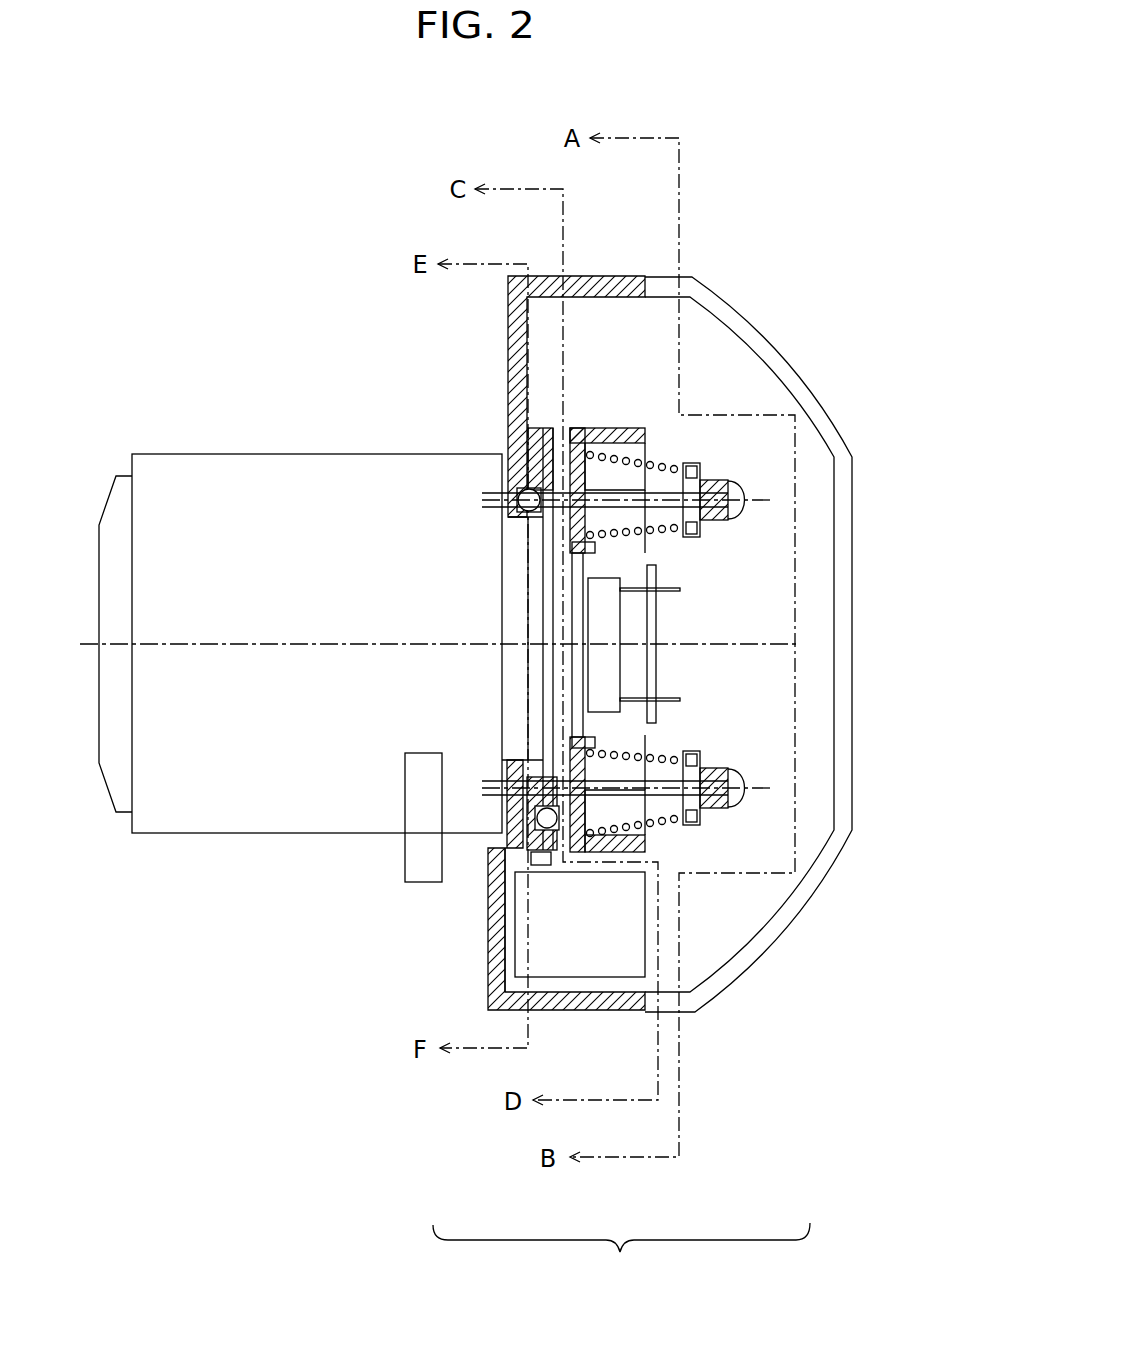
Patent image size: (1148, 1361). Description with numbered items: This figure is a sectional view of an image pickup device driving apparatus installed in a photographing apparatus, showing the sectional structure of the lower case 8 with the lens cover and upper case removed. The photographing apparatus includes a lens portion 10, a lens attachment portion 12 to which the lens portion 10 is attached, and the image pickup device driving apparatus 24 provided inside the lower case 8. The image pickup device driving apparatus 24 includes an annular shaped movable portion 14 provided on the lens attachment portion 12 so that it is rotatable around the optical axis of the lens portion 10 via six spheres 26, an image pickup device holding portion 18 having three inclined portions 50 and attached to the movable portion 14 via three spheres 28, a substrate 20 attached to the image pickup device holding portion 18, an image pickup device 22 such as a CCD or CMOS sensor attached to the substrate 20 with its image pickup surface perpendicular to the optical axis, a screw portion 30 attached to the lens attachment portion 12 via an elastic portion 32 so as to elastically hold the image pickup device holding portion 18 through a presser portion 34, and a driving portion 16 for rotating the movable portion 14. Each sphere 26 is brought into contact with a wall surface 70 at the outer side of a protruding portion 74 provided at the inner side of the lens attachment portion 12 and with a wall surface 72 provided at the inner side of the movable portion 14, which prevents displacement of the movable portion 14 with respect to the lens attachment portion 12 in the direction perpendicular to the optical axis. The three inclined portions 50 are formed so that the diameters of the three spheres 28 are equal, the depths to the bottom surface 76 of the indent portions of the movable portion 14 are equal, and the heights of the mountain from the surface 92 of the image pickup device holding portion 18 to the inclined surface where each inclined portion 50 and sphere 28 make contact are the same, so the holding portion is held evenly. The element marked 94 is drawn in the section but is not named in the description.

The lower case 8 is at (853, 762).
The lens portion 10 is at (250, 455).
The lens attachment portion 12 is at (497, 922).
The movable portion 14 is at (517, 412).
The driving portion 16 is at (647, 913).
The image pickup device holding portion 18 is at (600, 430).
The substrate 20 is at (657, 669).
The image pickup device 22 is at (620, 627).
The image pickup device driving apparatus 24 is at (621, 1259).
The sphere 26 is at (520, 490).
The sphere 28 is at (546, 828).
The screw portion 30 is at (742, 513).
The elastic portion 32 is at (653, 463).
The presser portion 34 is at (718, 480).
The inclined portion 50 is at (575, 848).
The wall surface 70 is at (526, 522).
The wall surface 72 is at (562, 440).
The protruding portion 74 is at (545, 520).
The bottom surface 76 is at (533, 852).
The surface 92 is at (557, 840).
The spindle block 94 is at (534, 486).